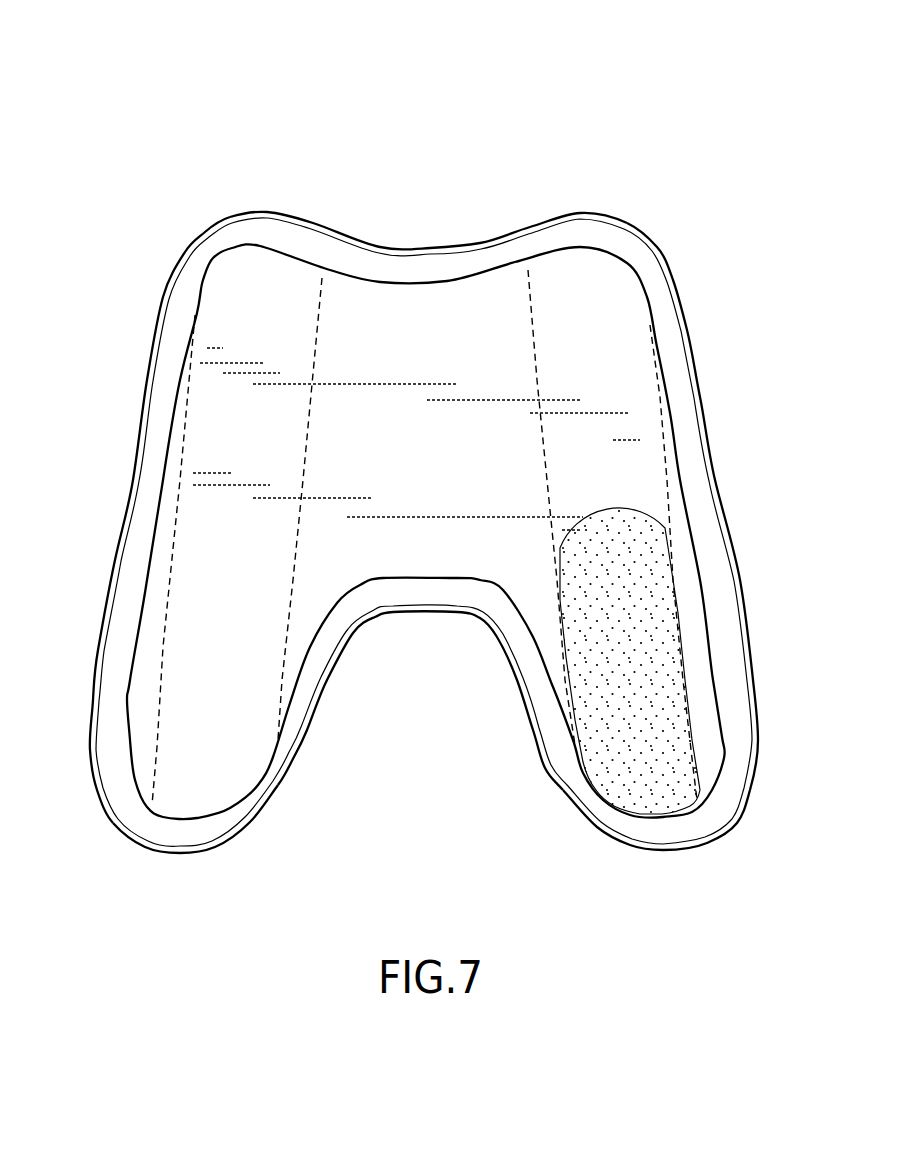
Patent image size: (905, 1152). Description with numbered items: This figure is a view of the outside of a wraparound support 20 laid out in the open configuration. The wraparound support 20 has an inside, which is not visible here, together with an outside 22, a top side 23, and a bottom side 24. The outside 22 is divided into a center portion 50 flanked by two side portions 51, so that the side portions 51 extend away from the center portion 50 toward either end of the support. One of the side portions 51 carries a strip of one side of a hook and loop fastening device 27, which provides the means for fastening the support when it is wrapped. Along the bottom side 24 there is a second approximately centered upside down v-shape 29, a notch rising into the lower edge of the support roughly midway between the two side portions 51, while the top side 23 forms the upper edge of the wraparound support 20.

The wraparound support 20 is at (226, 113).
The outside 22 is at (668, 307).
The top side 23 is at (502, 237).
The bottom side 24 is at (627, 847).
The strip of one side of a hook and loop fastening device 27 is at (652, 718).
The second approximately centered upside down v-shape 29 is at (397, 614).
The center portion 50 is at (445, 543).
The side portions 51 is at (233, 450).